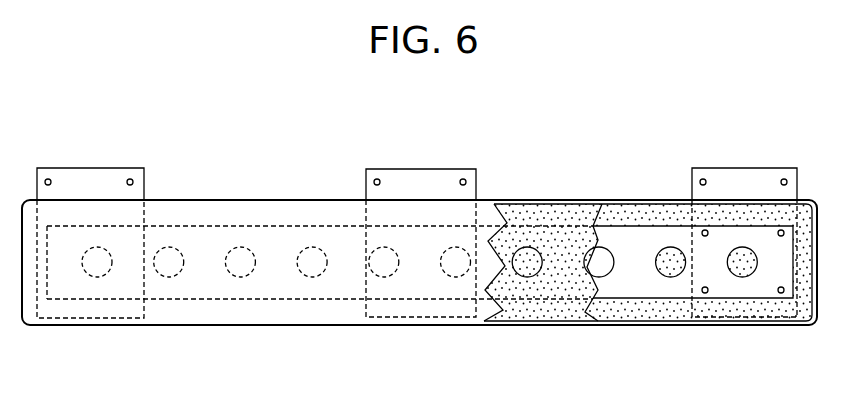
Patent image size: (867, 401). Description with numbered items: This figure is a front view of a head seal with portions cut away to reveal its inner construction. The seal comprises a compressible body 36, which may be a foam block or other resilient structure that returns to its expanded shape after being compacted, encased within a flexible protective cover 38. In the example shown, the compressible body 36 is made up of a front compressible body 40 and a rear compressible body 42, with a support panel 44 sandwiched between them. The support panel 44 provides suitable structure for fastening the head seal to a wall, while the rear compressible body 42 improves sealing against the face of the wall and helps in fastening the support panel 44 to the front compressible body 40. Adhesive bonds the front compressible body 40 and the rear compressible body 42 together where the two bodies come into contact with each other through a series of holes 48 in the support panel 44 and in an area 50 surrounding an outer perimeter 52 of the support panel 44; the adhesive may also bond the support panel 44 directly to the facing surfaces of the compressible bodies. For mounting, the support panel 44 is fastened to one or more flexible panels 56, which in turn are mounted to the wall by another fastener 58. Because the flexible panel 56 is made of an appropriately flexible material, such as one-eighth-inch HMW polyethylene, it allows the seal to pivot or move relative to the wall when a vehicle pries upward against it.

The compressible body 36 is at (553, 202).
The flexible protective cover 38 is at (535, 312).
The front compressible body 40 is at (603, 220).
The rear compressible body 42 is at (658, 215).
The support panel 44 is at (615, 298).
The holes 48 is at (243, 247).
The area surrounding outer perimeter 50 is at (749, 213).
The outer perimeter 52 is at (758, 298).
The flexible panel 56 is at (145, 192).
The fastener 58 is at (52, 183).